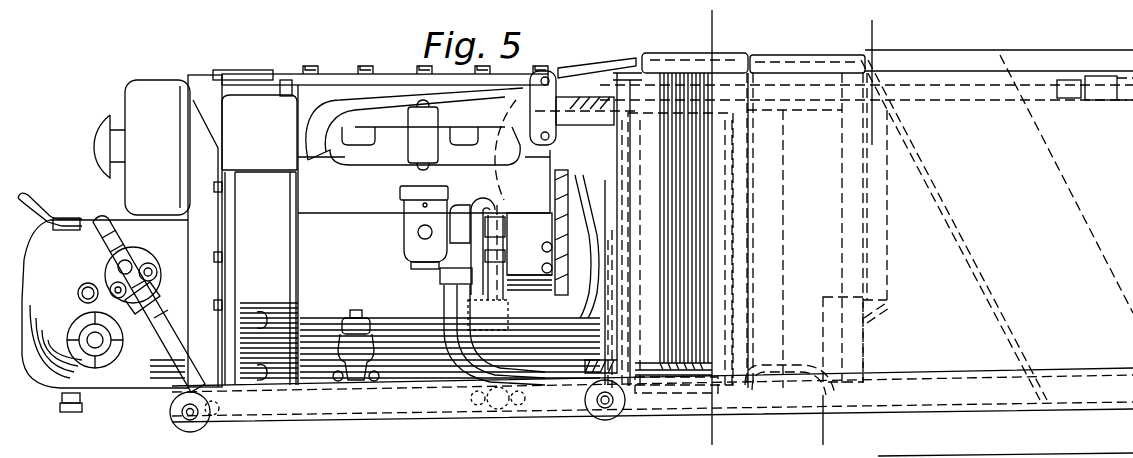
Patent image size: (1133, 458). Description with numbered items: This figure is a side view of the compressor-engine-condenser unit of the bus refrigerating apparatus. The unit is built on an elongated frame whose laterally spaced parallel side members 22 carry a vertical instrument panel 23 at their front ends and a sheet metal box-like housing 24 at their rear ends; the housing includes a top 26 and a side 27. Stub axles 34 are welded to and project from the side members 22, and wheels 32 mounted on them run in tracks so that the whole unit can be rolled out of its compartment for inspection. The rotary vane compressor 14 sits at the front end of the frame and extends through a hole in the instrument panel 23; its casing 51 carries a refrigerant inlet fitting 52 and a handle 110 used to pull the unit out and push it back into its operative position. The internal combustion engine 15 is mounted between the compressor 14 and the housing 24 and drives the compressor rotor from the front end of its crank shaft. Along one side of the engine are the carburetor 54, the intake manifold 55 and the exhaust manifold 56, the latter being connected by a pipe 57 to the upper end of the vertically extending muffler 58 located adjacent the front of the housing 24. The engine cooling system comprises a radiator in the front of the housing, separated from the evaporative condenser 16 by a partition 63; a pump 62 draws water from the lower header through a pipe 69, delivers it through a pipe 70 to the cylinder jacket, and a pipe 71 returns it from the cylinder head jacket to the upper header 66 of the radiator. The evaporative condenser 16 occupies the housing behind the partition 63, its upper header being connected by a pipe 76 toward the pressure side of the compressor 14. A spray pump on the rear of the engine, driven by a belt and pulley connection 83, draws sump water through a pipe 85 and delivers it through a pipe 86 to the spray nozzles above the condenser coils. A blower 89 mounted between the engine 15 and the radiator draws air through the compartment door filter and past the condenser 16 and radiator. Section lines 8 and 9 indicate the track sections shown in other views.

The section line 8 is at (816, 431).
The section line 9 is at (710, 431).
The compressor 14 is at (135, 226).
The internal combustion engine 15 is at (402, 226).
The evaporative condenser 16 is at (966, 242).
The side members 22 is at (433, 428).
The instrument panel 23 is at (190, 175).
The box-like housing 24 is at (982, 356).
The top 26 is at (1073, 457).
The side 27 is at (944, 230).
The wheels 32 is at (181, 428).
The stub axles 34 is at (600, 428).
The casing 51 is at (105, 316).
The refrigerant inlet fitting 52 is at (137, 262).
The carburetor 54 is at (412, 232).
The intake manifold 55 is at (398, 165).
The exhaust manifold 56 is at (375, 118).
The pipe 57 is at (572, 108).
The muffler 58 is at (866, 219).
The pump 62 is at (455, 275).
The partition 63 is at (868, 328).
The upper header 66 is at (680, 446).
The pipe 69 is at (455, 318).
The pipe 70 is at (484, 249).
The pipe 71 is at (606, 70).
The pipe 76 is at (876, 457).
The belt and pulley connection 83 is at (612, 238).
The pipe 85 is at (796, 378).
The pipe 86 is at (1046, 80).
The blower 89 is at (740, 180).
The handle 110 is at (50, 204).